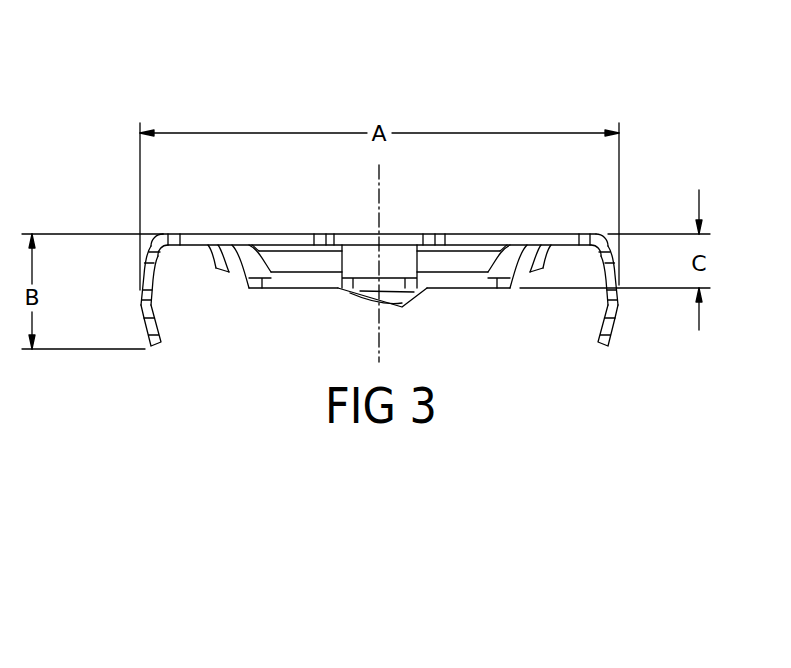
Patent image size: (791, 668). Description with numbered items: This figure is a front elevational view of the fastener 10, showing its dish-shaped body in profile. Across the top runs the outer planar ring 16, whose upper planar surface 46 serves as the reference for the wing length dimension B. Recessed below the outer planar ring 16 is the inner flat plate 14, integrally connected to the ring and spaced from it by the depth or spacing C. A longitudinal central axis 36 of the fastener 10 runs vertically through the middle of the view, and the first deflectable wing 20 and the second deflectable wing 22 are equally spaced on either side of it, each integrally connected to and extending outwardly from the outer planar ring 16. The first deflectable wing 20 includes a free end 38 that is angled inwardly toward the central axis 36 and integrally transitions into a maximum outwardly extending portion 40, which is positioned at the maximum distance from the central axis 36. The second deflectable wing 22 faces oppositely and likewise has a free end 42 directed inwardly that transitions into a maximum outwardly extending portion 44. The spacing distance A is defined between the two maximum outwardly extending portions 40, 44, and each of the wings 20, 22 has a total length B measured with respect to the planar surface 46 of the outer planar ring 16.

The fastener 10 is at (676, 98).
The inner flat plate 14 is at (303, 284).
The outer planar ring 16 is at (486, 233).
The first deflectable wing 20 is at (606, 297).
The second deflectable wing 22 is at (152, 293).
The longitudinal central axis 36 is at (378, 330).
The free end 38 is at (598, 347).
The maximum outwardly extending portion 40 is at (622, 321).
The free end 42 is at (156, 348).
The maximum outwardly extending portion 44 is at (138, 318).
The planar surface 46 is at (195, 226).